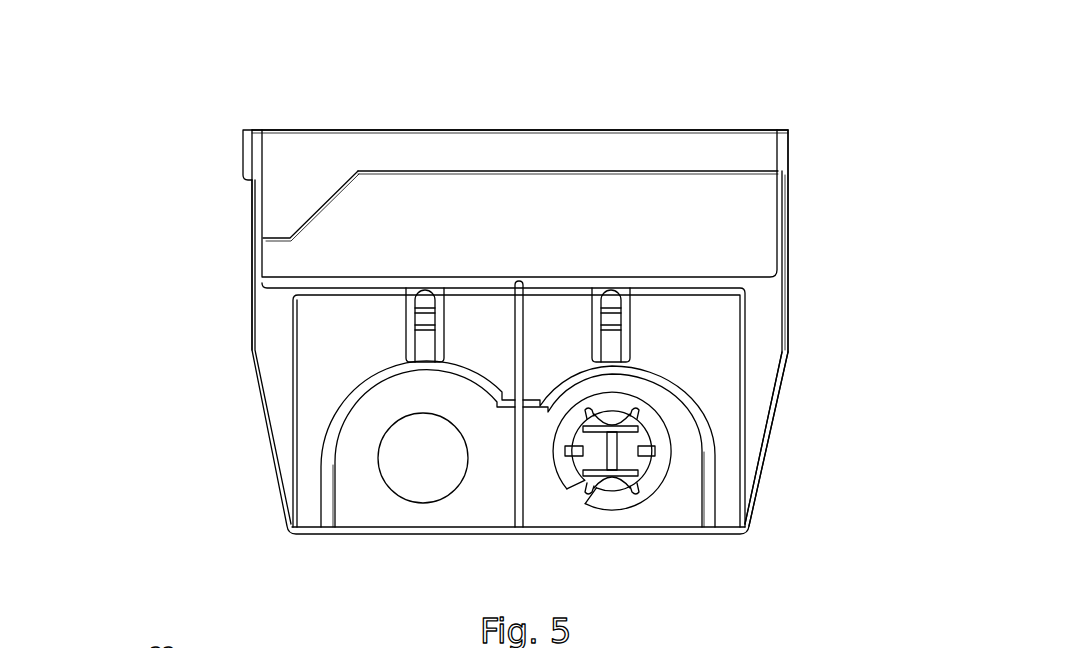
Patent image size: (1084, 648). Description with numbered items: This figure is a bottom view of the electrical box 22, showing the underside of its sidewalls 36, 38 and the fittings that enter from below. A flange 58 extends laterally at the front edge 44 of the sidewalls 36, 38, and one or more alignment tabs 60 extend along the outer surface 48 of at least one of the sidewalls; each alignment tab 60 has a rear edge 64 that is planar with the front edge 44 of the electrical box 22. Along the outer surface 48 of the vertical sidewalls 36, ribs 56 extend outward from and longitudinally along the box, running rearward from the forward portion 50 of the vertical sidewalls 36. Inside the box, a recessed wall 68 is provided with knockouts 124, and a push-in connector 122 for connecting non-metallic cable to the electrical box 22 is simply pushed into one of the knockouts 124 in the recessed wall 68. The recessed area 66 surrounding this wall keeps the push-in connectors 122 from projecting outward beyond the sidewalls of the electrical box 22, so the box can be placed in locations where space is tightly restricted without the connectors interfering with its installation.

The electrical box 22 is at (205, 410).
The vertical sidewall 36 is at (257, 290).
The sidewall 38 is at (543, 250).
The front edge 44 is at (522, 128).
The outer surface 48 is at (240, 244).
The forward portion 50 is at (785, 227).
The rib 56 is at (760, 358).
The flange 58 is at (600, 164).
The alignment tab 60 is at (240, 153).
The rear edge 64 is at (243, 182).
The recessed area 66 is at (562, 512).
The recessed wall 68 is at (440, 401).
The push-in connector 122 is at (623, 508).
The knockout 124 is at (405, 502).